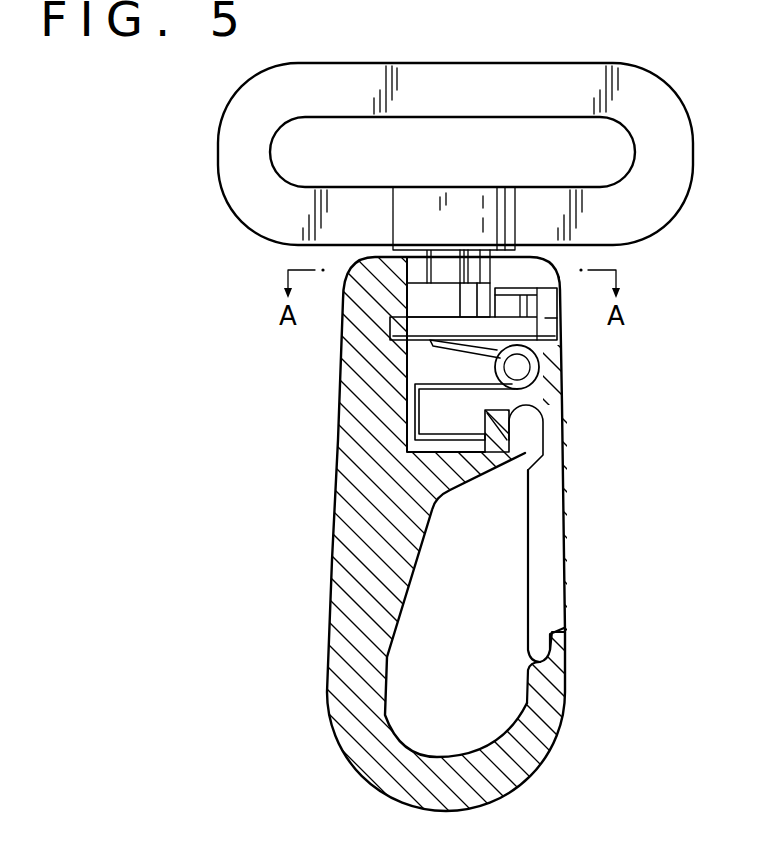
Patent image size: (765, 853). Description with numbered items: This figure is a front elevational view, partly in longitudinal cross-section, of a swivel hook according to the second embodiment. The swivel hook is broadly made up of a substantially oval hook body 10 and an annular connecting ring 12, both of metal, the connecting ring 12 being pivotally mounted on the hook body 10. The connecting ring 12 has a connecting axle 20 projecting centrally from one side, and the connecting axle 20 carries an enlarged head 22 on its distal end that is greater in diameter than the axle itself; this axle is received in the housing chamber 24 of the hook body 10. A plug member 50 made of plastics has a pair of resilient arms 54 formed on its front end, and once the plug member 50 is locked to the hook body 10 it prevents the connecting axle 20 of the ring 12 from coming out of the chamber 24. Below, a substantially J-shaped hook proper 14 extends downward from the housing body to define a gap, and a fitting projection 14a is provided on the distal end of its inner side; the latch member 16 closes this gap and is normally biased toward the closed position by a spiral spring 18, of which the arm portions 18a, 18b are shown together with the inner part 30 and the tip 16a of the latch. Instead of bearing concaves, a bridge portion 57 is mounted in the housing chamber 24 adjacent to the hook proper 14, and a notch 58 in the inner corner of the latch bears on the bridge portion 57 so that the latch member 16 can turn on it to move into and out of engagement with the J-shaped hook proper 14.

The hook body 10 is at (315, 553).
The annular connecting ring 12 is at (547, 57).
The J-shaped hook proper 14 is at (330, 688).
The fitting projection 14a is at (563, 643).
The latch member 16 is at (553, 566).
The gate tip 16a is at (528, 652).
The spiral spring 18 is at (538, 380).
The spring lower arm 18a is at (425, 393).
The spring upper arm 18b is at (440, 345).
The connecting axle 20 is at (437, 262).
The enlarged head 22 is at (412, 298).
The housing chamber 24 is at (570, 354).
The spring pin 30 is at (522, 368).
The plug member 50 is at (547, 320).
The resilient arms 54 is at (483, 270).
The bridge portion 57 is at (512, 450).
The notch 58 is at (526, 410).